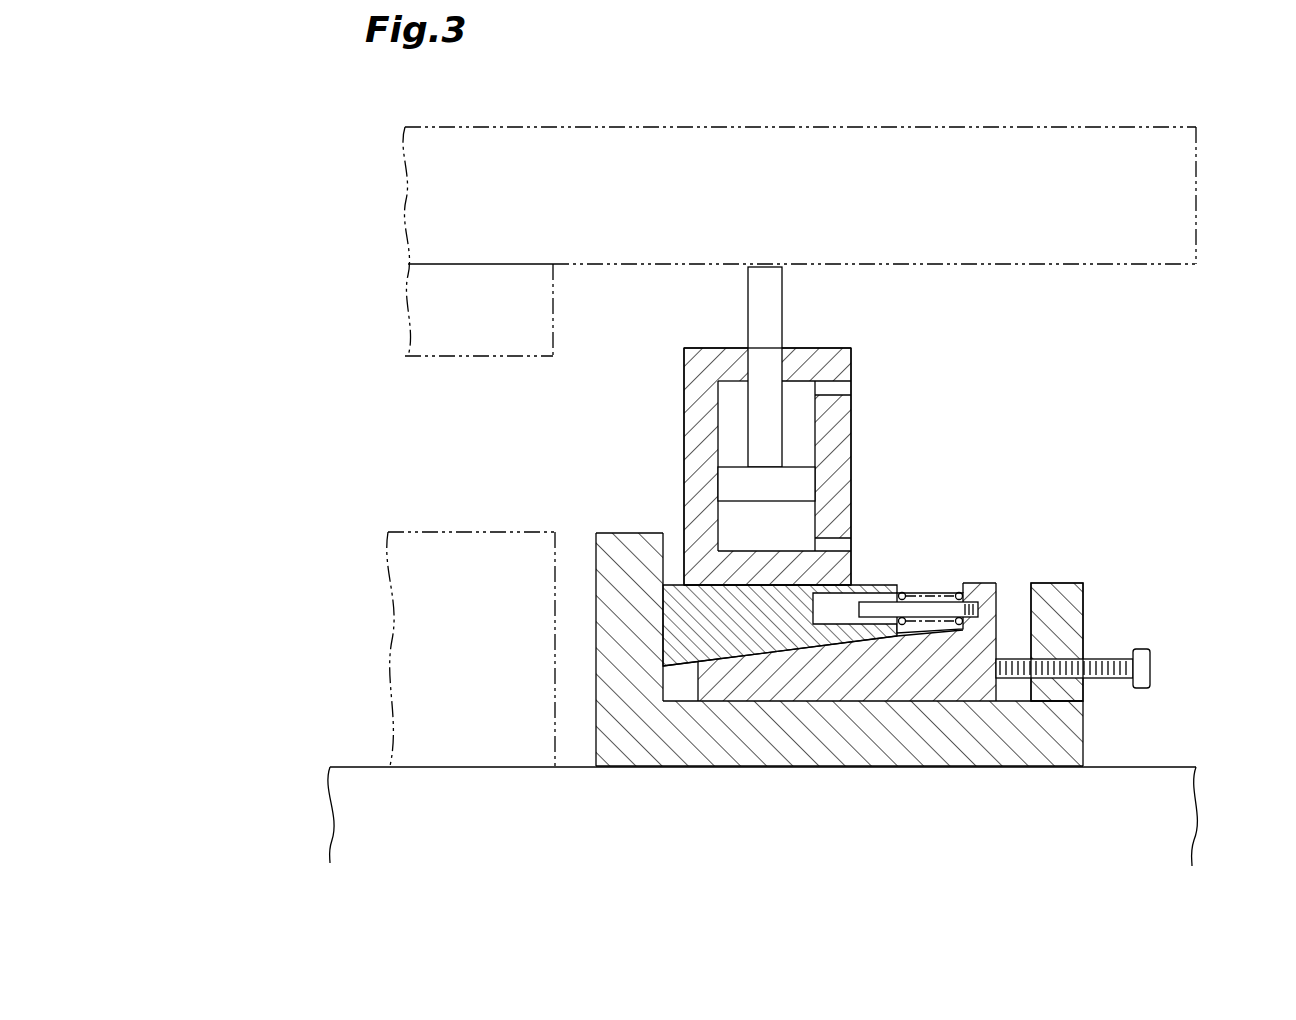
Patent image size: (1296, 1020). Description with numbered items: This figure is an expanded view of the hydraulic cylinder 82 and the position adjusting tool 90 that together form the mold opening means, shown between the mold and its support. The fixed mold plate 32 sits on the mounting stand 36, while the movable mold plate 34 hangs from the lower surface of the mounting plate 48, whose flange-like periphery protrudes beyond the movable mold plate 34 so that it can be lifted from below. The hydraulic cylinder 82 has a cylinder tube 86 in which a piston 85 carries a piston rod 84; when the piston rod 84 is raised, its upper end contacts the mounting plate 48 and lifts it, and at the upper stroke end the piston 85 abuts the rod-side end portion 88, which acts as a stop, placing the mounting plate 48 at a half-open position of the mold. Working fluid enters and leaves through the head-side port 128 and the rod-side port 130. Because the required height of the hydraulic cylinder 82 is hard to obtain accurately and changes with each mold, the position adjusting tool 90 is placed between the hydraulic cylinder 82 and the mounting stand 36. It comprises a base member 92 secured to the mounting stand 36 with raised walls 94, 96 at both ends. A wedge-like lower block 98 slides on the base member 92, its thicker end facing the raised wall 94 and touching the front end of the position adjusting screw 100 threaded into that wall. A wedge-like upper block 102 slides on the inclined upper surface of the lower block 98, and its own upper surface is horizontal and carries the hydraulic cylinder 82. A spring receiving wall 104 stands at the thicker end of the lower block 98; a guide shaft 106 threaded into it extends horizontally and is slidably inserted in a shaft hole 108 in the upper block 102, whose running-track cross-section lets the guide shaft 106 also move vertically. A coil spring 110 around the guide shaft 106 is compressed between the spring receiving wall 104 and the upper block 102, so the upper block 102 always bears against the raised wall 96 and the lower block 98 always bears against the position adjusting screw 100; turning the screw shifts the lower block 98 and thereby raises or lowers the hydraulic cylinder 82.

The fixed mold plate 32 is at (481, 556).
The movable mold plate 34 is at (537, 318).
The mounting stand 36 is at (1172, 765).
The mounting plate 48 is at (1172, 190).
The hydraulic cylinder 82 is at (860, 436).
The piston rod 84 is at (772, 293).
The piston 85 is at (722, 481).
The cylinder tube 86 is at (838, 466).
The rod-side end portion 88 is at (815, 378).
The position adjusting tool 90 is at (1060, 574).
The base member 92 is at (795, 740).
The raised wall 94 is at (1074, 608).
The raised wall 96 is at (634, 547).
The lower block 98 is at (944, 690).
The position adjusting screw 100 is at (1152, 668).
The upper block 102 is at (728, 638).
The spring receiving wall 104 is at (978, 586).
The guide shaft 106 is at (880, 588).
The shaft hole 108 is at (850, 640).
The coil spring 110 is at (957, 588).
The head-side port 128 is at (855, 542).
The rod-side port 130 is at (832, 388).